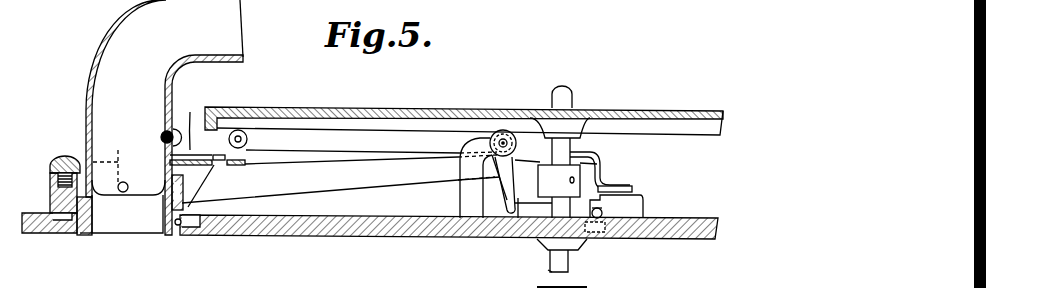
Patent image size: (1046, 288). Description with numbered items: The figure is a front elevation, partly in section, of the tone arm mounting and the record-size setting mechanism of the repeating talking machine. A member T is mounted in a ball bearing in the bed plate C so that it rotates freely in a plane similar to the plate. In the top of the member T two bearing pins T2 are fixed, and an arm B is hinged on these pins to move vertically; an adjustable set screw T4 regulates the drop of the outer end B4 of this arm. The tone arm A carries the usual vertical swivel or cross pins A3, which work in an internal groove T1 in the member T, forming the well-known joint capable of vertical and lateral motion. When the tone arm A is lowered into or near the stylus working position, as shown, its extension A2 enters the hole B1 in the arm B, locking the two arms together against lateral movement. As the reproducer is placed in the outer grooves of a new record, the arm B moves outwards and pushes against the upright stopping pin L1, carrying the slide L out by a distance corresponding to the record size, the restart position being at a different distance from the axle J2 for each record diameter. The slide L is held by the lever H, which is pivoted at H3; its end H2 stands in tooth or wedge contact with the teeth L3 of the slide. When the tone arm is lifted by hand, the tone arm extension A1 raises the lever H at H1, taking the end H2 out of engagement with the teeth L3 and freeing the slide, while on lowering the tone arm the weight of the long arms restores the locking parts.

The tone arm A is at (160, 117).
The tone arm extension A1 is at (171, 130).
The extension A2 is at (217, 165).
The vertical swivel or cross pins A3 is at (128, 187).
The arm B is at (383, 179).
The hole B1 is at (178, 225).
The outer end of arm B B4 is at (611, 176).
The bed plate C is at (313, 234).
The lever H is at (306, 128).
The lifting point of lever H H1 is at (240, 134).
The locking end of lever H H2 is at (480, 220).
The pivot H3 is at (506, 130).
The axle J2 is at (565, 99).
The slide L is at (613, 239).
The upright stopping pin L1 is at (632, 189).
The teeth L3 is at (513, 240).
The member T is at (121, 214).
The internal groove T1 is at (60, 198).
The bearing pins T2 is at (107, 157).
The adjustable set screw T4 is at (61, 160).